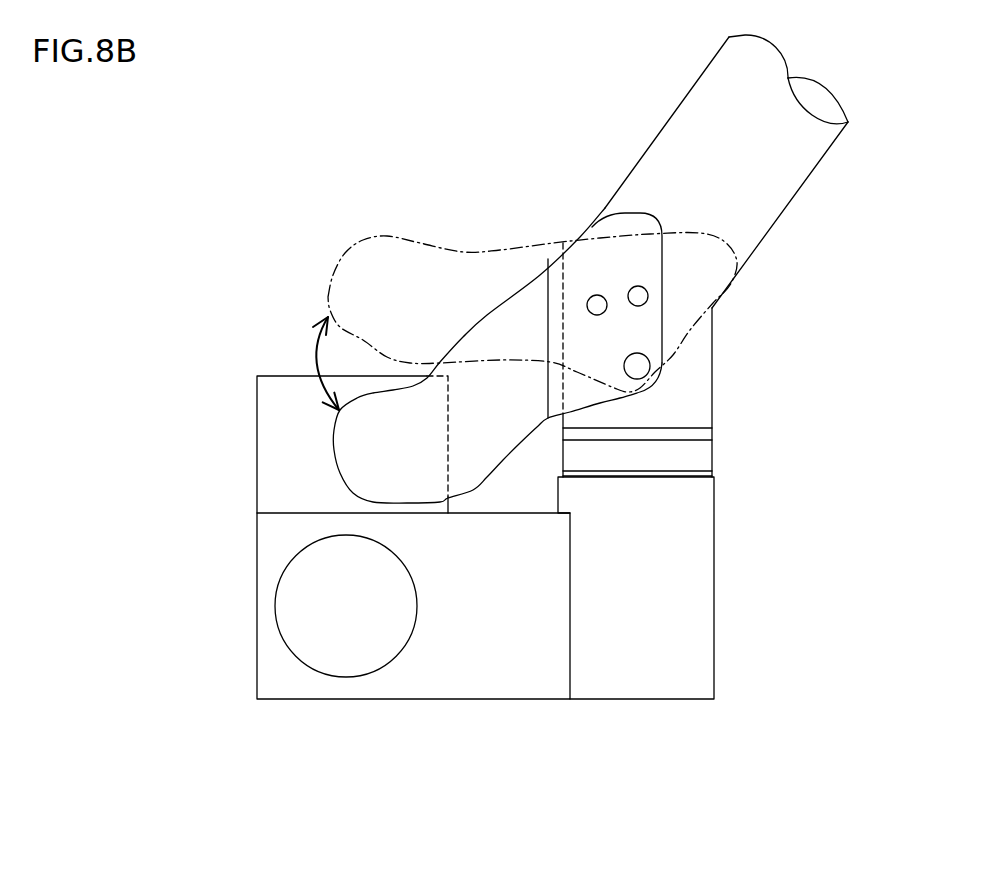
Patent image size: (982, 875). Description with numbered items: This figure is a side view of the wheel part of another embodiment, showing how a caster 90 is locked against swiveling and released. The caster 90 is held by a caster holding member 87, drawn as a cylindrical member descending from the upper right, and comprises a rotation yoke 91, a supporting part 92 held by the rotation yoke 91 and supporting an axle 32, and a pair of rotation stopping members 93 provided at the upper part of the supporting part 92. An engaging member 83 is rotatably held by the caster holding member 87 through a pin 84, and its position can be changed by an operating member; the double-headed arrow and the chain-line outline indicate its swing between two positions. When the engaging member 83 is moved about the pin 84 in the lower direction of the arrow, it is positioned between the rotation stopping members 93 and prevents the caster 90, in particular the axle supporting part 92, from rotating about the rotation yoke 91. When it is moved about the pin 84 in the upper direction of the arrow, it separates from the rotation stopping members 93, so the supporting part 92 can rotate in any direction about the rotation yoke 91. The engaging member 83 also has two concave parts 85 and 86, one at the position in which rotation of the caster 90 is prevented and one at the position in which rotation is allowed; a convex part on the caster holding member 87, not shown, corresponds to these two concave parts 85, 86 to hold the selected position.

The caster 90 is at (523, 416).
The rotation yoke 91 is at (693, 613).
The supporting part 92 is at (513, 678).
The rotation stopping member 93 is at (278, 415).
The axle 32 is at (372, 676).
The engaging member 83 is at (357, 458).
The pin 84 is at (641, 366).
The concave part 85 is at (594, 296).
The concave part 86 is at (637, 287).
The caster holding member 87 is at (697, 108).